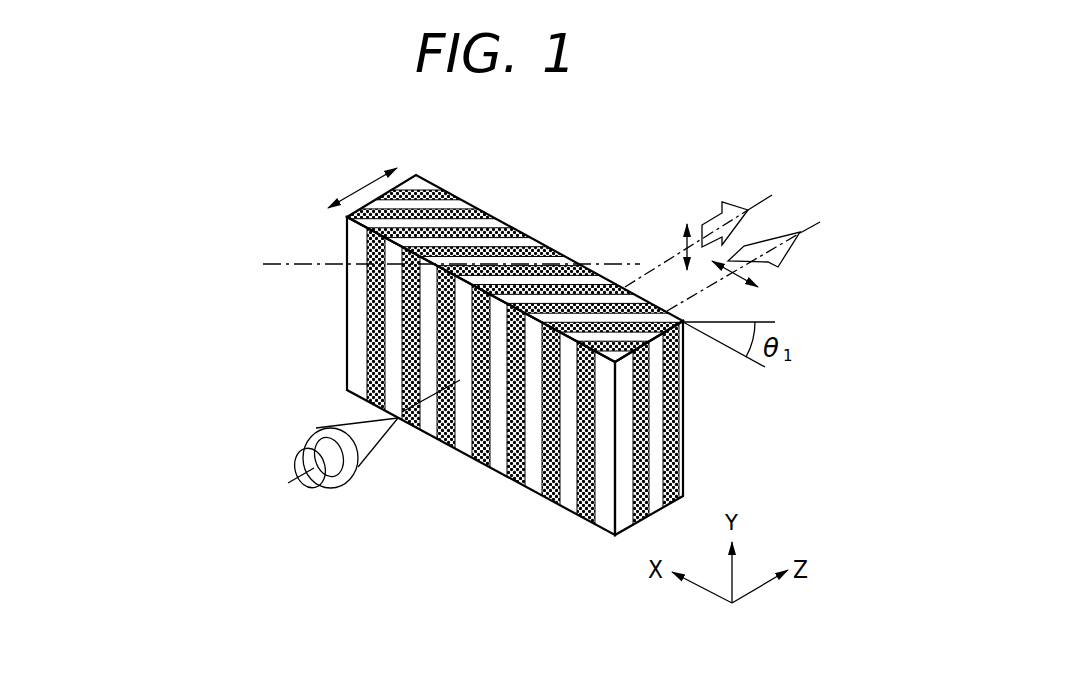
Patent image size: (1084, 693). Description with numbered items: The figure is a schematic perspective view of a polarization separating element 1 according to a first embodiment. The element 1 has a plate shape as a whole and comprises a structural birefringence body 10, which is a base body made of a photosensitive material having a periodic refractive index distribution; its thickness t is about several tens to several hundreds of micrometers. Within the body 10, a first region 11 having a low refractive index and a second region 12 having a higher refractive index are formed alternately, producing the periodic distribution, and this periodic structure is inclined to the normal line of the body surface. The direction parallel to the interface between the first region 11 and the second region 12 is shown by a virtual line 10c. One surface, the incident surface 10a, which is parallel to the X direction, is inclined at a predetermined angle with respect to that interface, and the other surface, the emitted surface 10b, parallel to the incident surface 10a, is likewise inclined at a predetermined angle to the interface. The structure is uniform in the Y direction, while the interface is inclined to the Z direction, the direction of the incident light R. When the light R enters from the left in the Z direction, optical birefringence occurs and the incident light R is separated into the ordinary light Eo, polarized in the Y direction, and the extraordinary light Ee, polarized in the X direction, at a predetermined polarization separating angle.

The polarization separating element 1 is at (222, 187).
The structural birefringence body 10 is at (565, 255).
The incident surface 10a is at (533, 453).
The emitted surface 10b is at (684, 418).
The virtual line 10c is at (290, 263).
The first region 11 is at (447, 232).
The second region 12 is at (492, 238).
The thickness t is at (362, 185).
The incident light R is at (315, 432).
The ordinary light Eo is at (698, 237).
The extraordinary light Ee is at (743, 266).